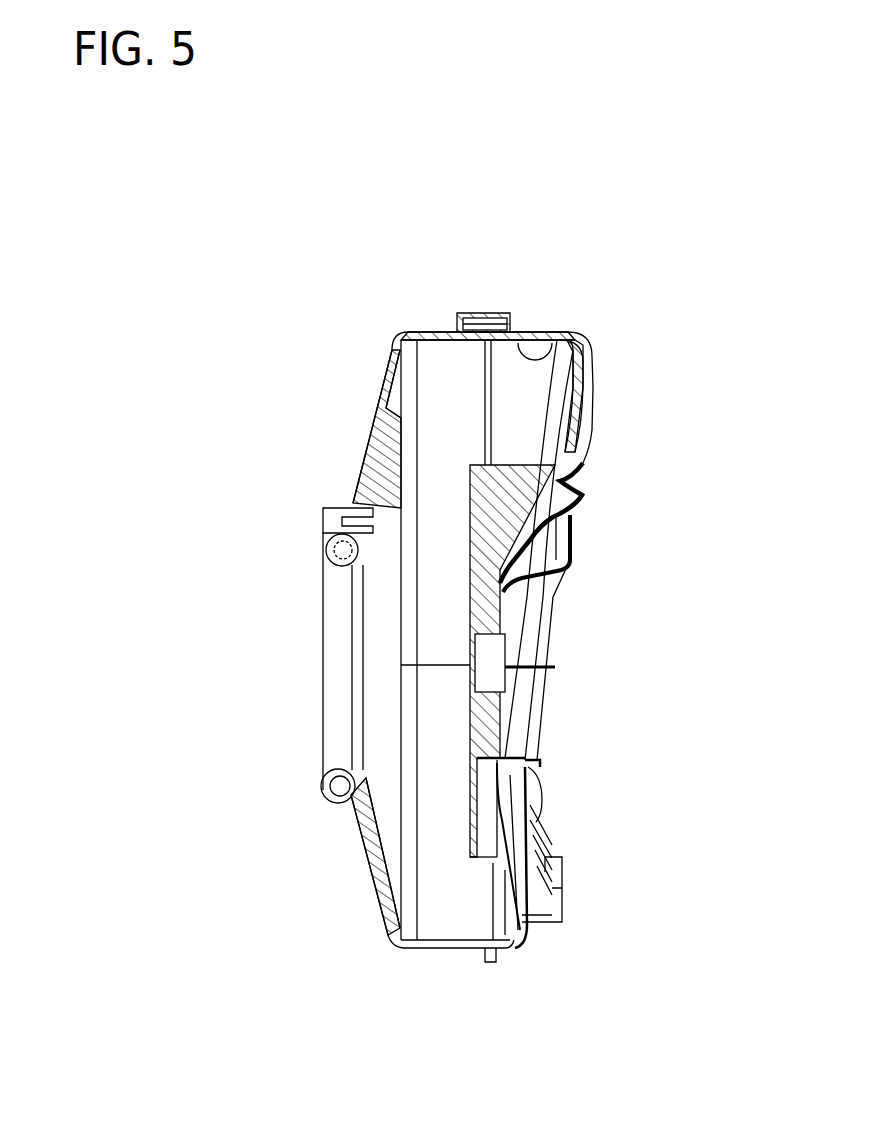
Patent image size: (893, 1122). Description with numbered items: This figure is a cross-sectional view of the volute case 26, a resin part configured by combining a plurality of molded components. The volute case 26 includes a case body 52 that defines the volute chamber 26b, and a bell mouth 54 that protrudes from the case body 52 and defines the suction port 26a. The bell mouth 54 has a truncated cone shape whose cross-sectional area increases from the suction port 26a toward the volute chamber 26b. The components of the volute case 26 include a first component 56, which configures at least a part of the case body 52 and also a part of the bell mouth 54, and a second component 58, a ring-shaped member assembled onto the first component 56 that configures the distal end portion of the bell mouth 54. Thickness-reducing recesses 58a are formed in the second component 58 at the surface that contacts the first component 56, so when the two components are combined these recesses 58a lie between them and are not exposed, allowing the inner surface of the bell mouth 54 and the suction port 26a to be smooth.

The volute case 26 is at (671, 186).
The suction port 26a is at (350, 563).
The volute chamber 26b is at (556, 332).
The case body 52 is at (481, 277).
The bell mouth 54 is at (321, 445).
The first component 56 is at (441, 945).
The second component 58 is at (332, 806).
The recesses 58a is at (348, 768).